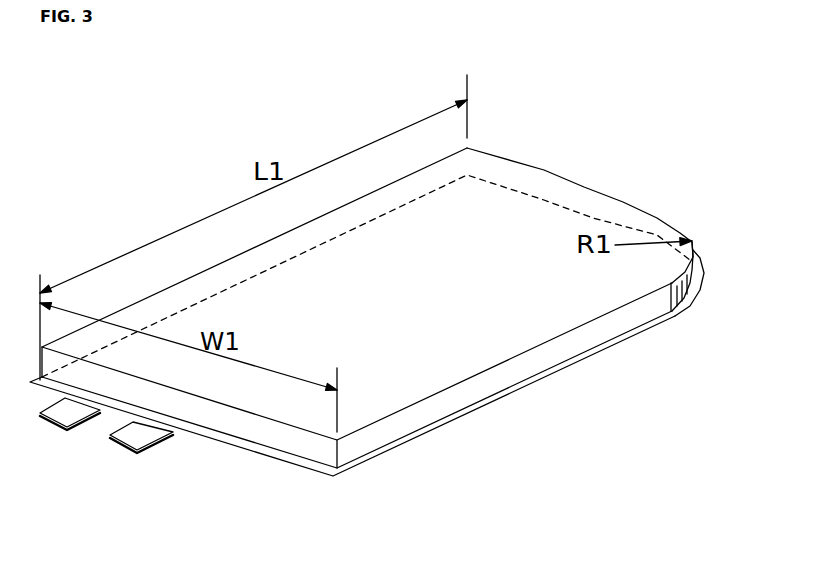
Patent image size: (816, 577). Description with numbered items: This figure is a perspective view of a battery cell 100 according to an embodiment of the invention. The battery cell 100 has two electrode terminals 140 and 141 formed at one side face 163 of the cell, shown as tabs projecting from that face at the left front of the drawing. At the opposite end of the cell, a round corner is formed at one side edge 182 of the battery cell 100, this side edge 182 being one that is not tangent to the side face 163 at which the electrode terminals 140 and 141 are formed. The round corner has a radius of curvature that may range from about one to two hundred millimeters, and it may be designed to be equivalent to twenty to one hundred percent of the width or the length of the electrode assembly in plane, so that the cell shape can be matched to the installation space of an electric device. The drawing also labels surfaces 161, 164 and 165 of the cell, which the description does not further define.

The battery cell 100 is at (143, 182).
The electrode terminal 140 is at (40, 428).
The electrode terminal 141 is at (120, 440).
The top surface 161 is at (325, 337).
The side face 163 is at (267, 438).
The side surface 164 is at (549, 352).
The rounded edge 165 is at (587, 197).
The side edge 182 is at (704, 272).